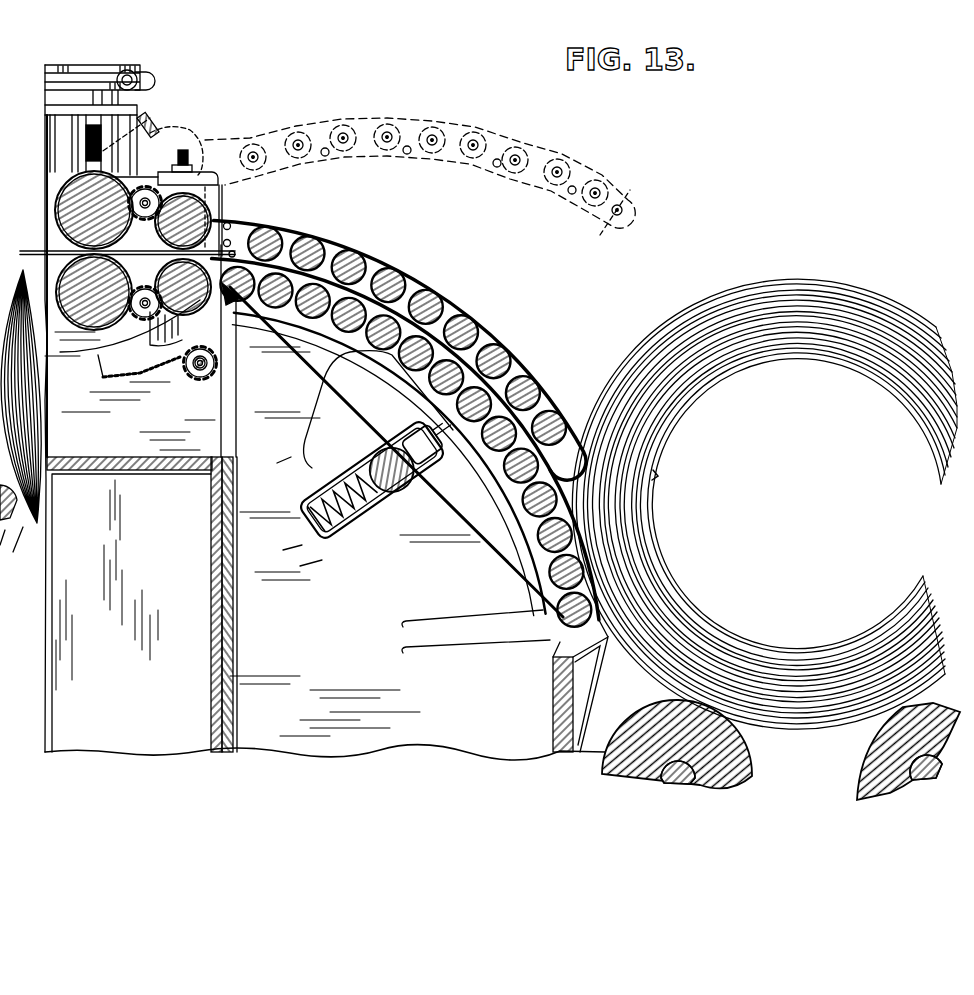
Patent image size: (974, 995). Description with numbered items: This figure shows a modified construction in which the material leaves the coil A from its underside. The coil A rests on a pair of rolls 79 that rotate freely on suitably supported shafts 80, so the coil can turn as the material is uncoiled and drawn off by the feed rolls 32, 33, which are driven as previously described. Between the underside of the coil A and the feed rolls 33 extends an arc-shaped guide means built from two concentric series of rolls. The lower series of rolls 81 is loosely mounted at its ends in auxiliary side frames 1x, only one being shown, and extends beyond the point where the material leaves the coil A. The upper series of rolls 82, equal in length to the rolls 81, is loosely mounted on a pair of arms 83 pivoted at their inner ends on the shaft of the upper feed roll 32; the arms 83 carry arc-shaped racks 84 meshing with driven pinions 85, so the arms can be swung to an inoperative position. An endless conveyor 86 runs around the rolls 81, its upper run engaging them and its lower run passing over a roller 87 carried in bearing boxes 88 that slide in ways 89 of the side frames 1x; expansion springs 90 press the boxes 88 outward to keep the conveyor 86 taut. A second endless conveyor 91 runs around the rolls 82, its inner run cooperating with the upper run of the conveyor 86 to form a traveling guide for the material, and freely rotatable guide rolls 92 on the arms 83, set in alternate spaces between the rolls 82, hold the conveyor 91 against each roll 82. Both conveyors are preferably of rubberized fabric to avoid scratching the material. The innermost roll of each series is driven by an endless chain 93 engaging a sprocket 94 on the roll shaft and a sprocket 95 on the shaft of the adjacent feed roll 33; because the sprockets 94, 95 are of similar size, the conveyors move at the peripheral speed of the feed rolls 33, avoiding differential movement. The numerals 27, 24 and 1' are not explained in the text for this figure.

The feed roll 32 is at (47, 203).
The sprocket 95 is at (156, 279).
The endless chain 93 is at (240, 225).
The sprocket 94 is at (298, 232).
The roller conveyor 27 is at (420, 183).
The endless conveyor 91 is at (414, 283).
The upper series of rolls 82 is at (468, 315).
The arms 83 is at (492, 337).
The guide rolls 92 is at (355, 337).
The ways 89 is at (410, 421).
The roller 87 is at (385, 480).
The bearing boxes 88 is at (401, 497).
The expansion springs 90 is at (362, 527).
The roller track 24 is at (405, 447).
The lower series of rolls 81 is at (532, 506).
The endless conveyor 86 is at (506, 563).
The arc-shaped racks 84 is at (123, 366).
The feed roll 33 is at (143, 370).
The pinions 85 is at (197, 381).
The frame 1' is at (325, 430).
The auxiliary side frames 1x is at (391, 748).
The coil A is at (727, 292).
The rolls 79 is at (850, 762).
The shafts 80 is at (930, 778).